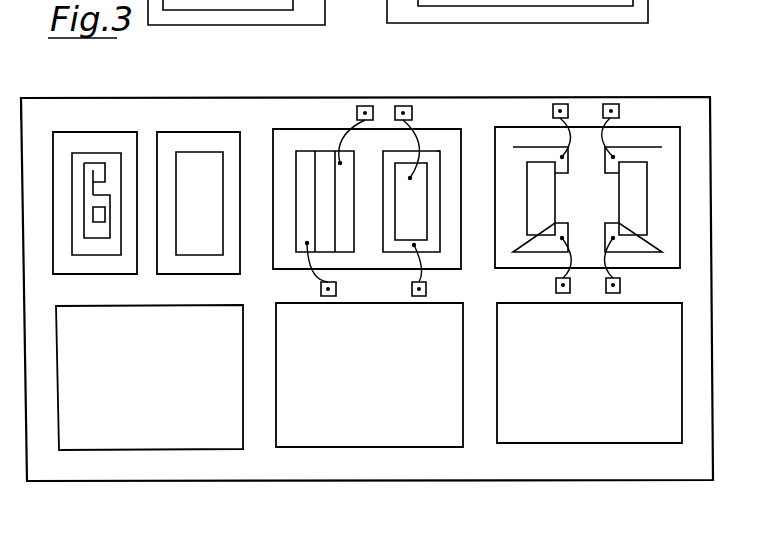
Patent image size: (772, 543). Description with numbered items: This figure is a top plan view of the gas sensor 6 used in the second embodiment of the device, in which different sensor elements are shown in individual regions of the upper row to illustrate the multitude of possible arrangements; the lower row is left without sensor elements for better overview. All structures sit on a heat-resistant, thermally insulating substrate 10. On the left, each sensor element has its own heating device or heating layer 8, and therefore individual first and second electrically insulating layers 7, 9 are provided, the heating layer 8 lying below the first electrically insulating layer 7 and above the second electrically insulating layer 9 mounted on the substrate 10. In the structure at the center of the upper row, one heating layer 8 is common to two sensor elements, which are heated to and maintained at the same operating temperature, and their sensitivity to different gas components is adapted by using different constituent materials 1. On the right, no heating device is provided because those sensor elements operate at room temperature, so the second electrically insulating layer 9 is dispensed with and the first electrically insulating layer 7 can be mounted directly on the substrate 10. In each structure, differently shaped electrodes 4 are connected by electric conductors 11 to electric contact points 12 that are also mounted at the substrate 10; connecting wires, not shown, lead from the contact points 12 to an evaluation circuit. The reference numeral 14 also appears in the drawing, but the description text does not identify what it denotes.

The constituent material 1 is at (100, 160).
The electrode 4 is at (115, 155).
The gas sensor 6 is at (353, 531).
The first electrically insulating layer 7 is at (670, 142).
The heating device or heating layer 8 is at (62, 142).
The second electrically insulating layer 9 is at (177, 142).
The substrate 10 is at (37, 117).
The electric conductor 11 is at (355, 118).
The electric contact point 12 is at (403, 106).
The connection 14 is at (418, 180).